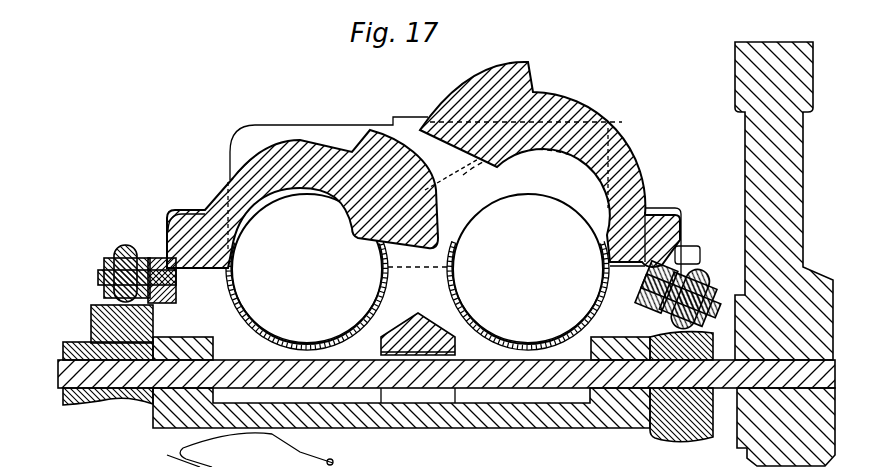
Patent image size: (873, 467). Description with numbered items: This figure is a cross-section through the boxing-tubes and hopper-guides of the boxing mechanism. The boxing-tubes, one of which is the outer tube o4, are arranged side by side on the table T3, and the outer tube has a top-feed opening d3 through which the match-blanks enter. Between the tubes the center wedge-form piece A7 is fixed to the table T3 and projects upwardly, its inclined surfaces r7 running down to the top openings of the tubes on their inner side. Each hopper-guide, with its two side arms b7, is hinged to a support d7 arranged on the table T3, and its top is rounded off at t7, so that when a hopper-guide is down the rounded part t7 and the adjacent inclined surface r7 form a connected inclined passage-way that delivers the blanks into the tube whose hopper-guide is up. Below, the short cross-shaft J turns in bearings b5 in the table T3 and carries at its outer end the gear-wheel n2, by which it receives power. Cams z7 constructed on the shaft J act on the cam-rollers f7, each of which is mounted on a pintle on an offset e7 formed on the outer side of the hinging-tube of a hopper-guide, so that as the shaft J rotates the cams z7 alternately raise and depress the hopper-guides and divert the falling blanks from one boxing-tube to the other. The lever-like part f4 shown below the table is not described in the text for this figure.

The short cross-shaft J is at (427, 374).
The gear-wheel n2 is at (780, 42).
The cam-rollers z7 is at (388, 382).
The bearings b5 is at (401, 346).
The table T3 is at (401, 420).
The boxing-tube o4 is at (417, 272).
The top-feed opening d3 is at (530, 178).
The center wedge-form piece A7 is at (418, 311).
The side arms b7 is at (423, 165).
The rounded-off top t7 is at (452, 130).
The inclined surfaces r7 is at (458, 204).
The support d7 is at (541, 241).
The offset e7 is at (421, 245).
The cam-roller f7 is at (126, 249).
The lever arm f4 is at (250, 450).